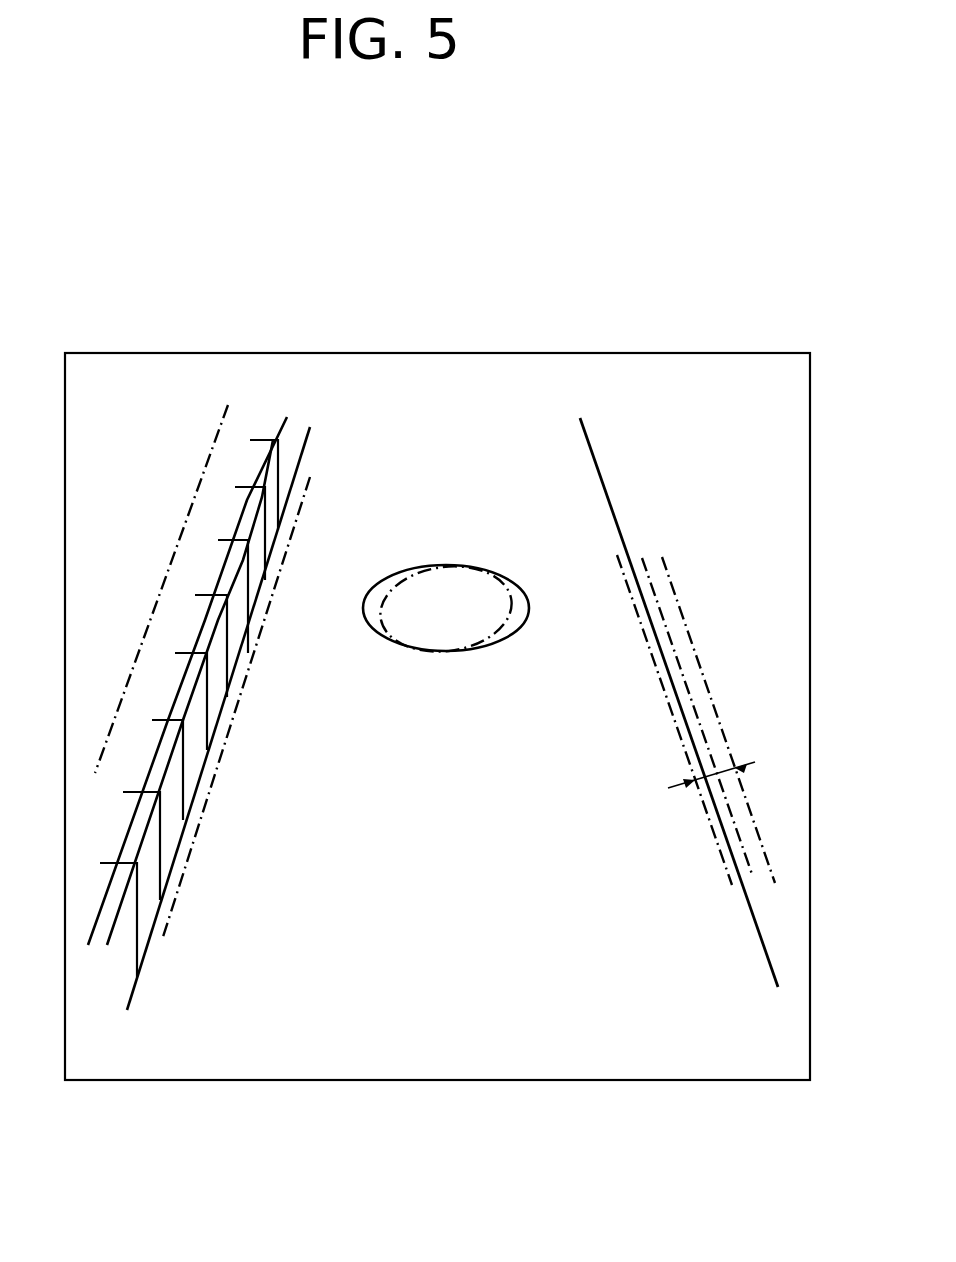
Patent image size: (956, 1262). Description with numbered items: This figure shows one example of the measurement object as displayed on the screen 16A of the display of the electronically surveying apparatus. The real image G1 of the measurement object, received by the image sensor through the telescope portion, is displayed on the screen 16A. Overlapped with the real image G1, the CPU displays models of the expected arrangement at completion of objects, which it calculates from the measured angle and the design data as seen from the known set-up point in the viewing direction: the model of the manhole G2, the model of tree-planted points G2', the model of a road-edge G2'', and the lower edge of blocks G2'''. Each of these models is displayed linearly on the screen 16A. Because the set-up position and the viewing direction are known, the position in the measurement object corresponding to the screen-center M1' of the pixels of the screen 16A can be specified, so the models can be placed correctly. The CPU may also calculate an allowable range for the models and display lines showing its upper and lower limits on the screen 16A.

The screen 16A is at (708, 406).
The real image G1 is at (227, 407).
The model of the manhole G2 is at (446, 573).
The model of tree-planted points G2' is at (160, 589).
The model of a road-edge G2'' is at (696, 677).
The lower edge of blocks G2''' is at (265, 708).
The screen-center M1' is at (441, 765).